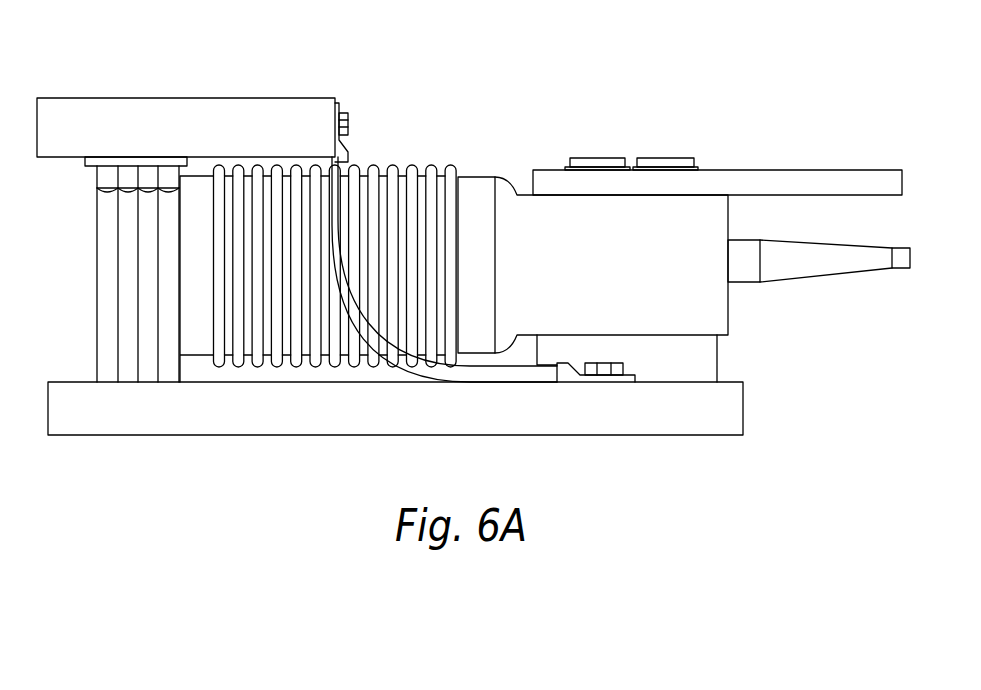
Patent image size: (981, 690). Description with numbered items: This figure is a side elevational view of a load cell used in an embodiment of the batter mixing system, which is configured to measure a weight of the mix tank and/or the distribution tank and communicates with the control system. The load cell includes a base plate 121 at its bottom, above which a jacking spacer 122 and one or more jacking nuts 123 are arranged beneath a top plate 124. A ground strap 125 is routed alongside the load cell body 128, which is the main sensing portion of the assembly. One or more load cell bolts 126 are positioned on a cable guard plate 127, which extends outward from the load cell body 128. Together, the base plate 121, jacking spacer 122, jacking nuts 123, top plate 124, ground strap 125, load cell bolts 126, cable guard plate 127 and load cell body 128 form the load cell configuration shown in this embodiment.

The base plate 121 is at (165, 436).
The jacking spacer 122 is at (97, 293).
The jacking nuts 123 is at (97, 190).
The top plate 124 is at (97, 98).
The ground strap 125 is at (343, 235).
The load cell bolts 126 is at (657, 158).
The cable guard plate 127 is at (837, 170).
The load cell body 128 is at (707, 308).